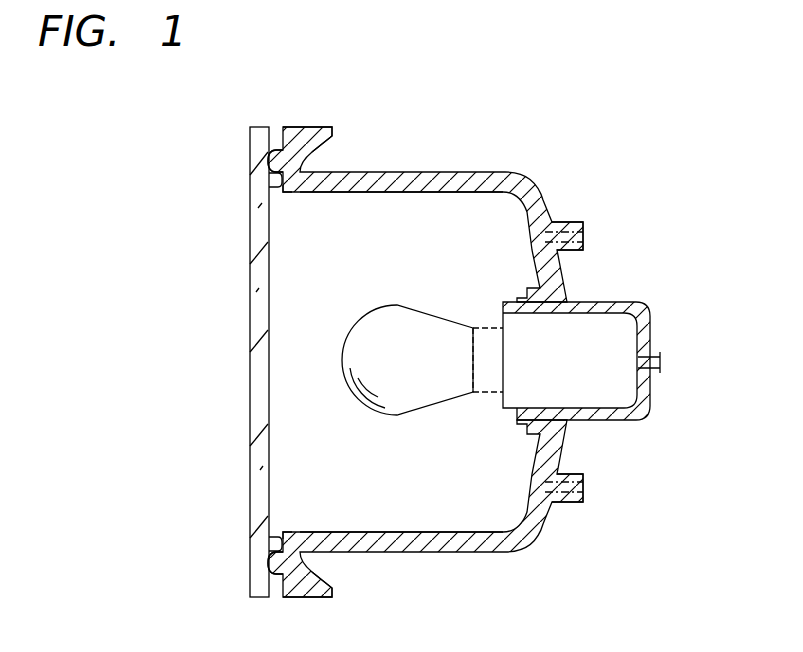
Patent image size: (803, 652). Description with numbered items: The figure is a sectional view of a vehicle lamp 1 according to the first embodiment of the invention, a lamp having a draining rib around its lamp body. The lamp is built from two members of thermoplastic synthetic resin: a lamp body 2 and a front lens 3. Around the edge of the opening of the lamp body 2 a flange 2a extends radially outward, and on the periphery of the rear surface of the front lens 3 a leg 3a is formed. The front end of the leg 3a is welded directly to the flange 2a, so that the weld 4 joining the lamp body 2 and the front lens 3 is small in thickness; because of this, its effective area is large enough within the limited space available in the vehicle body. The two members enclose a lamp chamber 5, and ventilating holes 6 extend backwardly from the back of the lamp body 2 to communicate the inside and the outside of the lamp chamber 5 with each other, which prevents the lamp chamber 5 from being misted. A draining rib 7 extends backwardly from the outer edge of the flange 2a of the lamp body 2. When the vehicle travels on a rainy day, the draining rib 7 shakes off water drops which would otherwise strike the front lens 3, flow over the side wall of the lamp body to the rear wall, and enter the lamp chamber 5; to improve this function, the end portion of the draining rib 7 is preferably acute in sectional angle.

The vehicle lamp 1 is at (568, 126).
The lamp body 2 is at (383, 171).
The flange 2a is at (282, 146).
The front lens 3 is at (251, 358).
The leg 3a is at (274, 186).
The weld 4 is at (291, 200).
The lamp chamber 5 is at (284, 296).
The ventilating holes 6 is at (585, 229).
The draining rib 7 is at (320, 140).